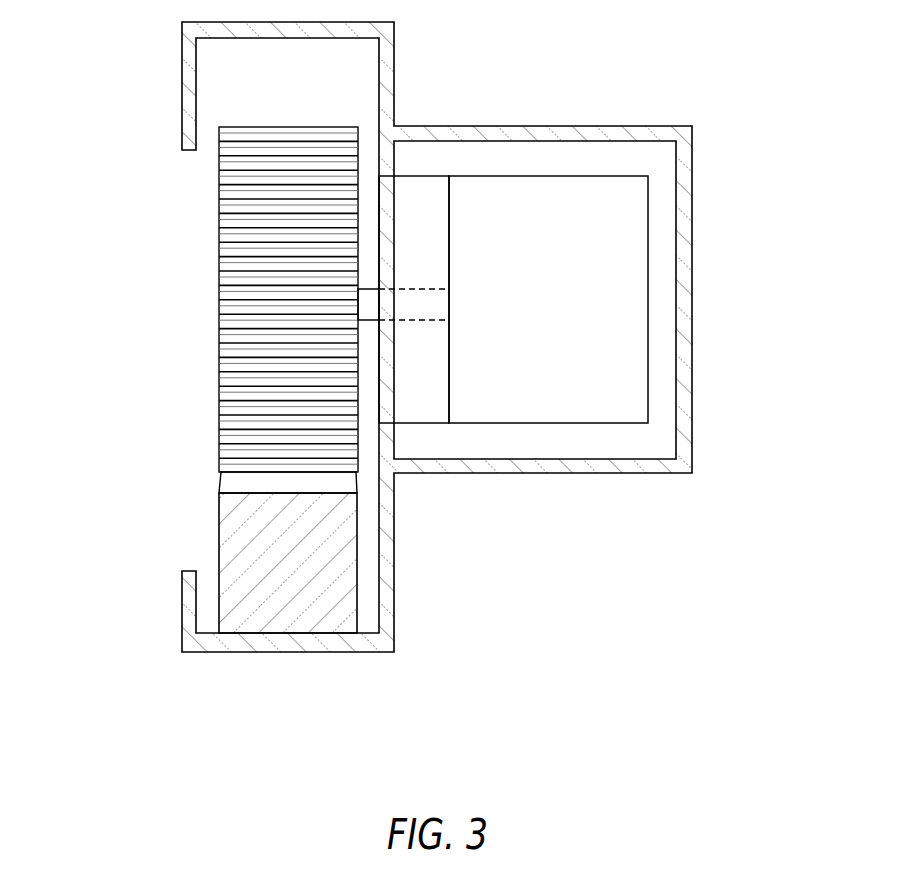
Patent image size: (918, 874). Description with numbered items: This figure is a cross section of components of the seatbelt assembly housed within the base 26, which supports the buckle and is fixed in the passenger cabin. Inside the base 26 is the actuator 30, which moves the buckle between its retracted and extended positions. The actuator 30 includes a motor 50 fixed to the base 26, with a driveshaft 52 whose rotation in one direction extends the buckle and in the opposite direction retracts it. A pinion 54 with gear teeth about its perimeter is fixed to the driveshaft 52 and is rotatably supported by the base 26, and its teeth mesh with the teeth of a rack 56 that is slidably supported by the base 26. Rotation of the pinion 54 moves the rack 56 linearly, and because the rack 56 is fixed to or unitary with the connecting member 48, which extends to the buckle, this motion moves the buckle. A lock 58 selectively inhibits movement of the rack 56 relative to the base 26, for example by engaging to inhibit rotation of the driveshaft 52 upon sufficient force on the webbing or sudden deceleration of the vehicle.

The base 26 is at (395, 63).
The actuator 30 is at (170, 305).
The connecting member 48 is at (240, 540).
The motor 50 is at (543, 403).
The driveshaft 52 is at (366, 289).
The pinion 54 is at (218, 225).
The rack 56 is at (240, 483).
The lock 58 is at (412, 403).